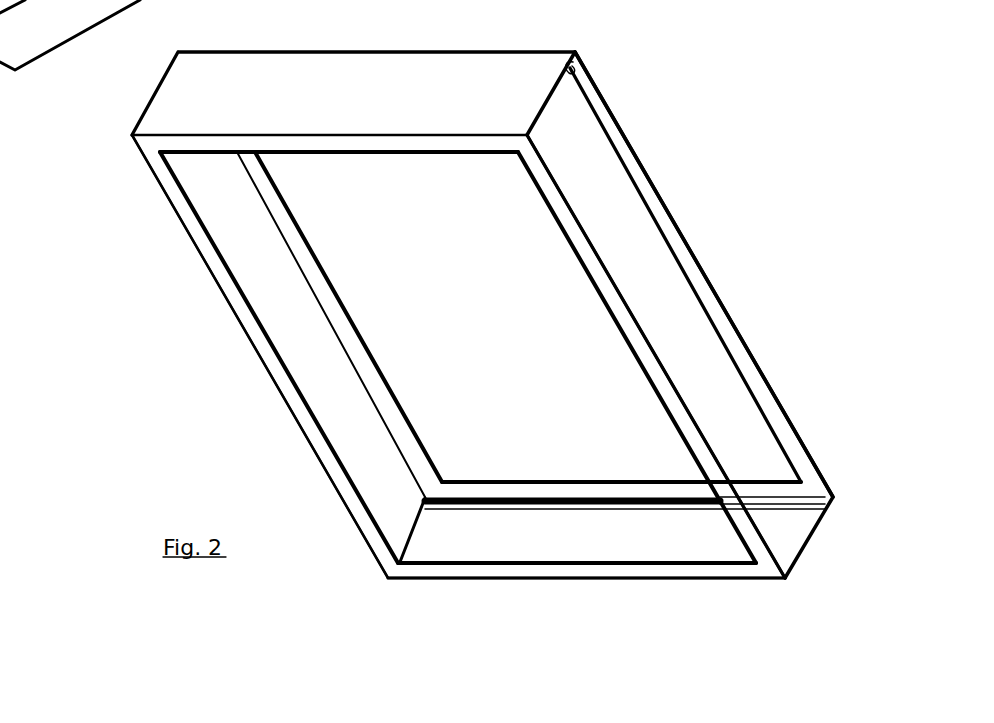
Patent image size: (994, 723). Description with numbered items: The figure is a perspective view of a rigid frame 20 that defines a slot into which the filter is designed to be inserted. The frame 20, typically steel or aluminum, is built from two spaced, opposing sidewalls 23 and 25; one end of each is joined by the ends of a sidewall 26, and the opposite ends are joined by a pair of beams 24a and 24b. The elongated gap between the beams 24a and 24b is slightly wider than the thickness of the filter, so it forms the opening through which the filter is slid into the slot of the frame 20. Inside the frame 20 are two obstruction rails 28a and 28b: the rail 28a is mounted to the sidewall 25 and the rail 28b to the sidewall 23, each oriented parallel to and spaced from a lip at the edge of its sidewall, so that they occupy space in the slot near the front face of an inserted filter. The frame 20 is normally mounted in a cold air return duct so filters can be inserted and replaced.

The frame 20 is at (617, 80).
The sidewall 23 is at (487, 538).
The beam 24a is at (737, 352).
The beam 24b is at (633, 342).
The sidewall 25 is at (288, 80).
The sidewall 26 is at (233, 245).
The rail 28a is at (568, 73).
The rail 28b is at (768, 506).